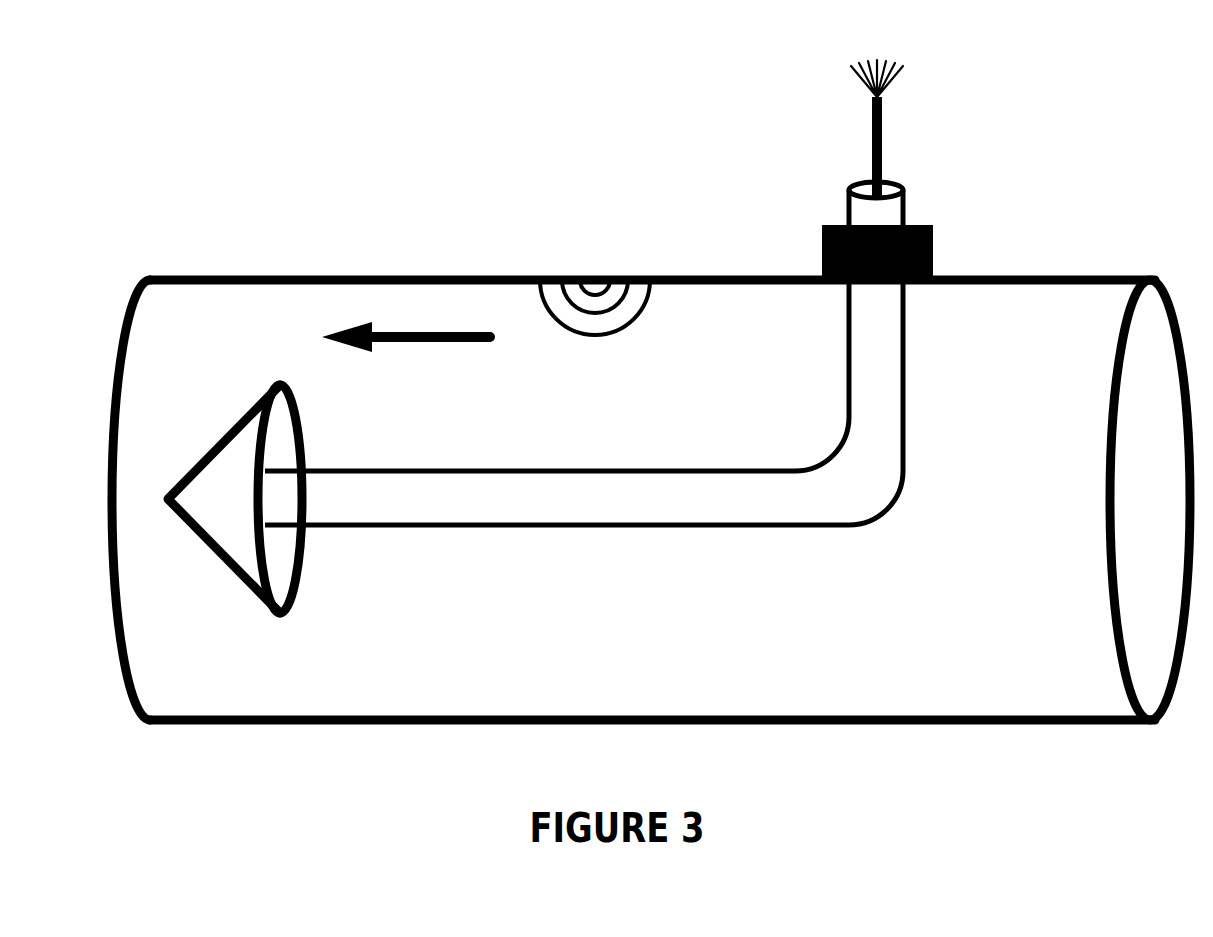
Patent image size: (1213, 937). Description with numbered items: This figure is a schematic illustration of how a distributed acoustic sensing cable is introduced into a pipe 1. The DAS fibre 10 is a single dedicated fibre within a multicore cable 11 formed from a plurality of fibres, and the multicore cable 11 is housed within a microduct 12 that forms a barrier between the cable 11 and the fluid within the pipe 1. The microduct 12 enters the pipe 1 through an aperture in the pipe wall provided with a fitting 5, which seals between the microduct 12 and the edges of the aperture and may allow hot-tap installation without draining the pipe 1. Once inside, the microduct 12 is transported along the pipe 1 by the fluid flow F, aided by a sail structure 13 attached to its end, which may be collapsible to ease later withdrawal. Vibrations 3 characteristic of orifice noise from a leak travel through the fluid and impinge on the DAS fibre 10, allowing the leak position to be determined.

The pipe 1 is at (187, 268).
The sail structure 13 is at (290, 366).
The fluid flow F is at (439, 316).
The vibrations 3 is at (598, 262).
The microduct 12 is at (803, 447).
The fitting 5 is at (950, 249).
The multicore cable 11 is at (896, 137).
The DAS fibre 10 is at (908, 72).